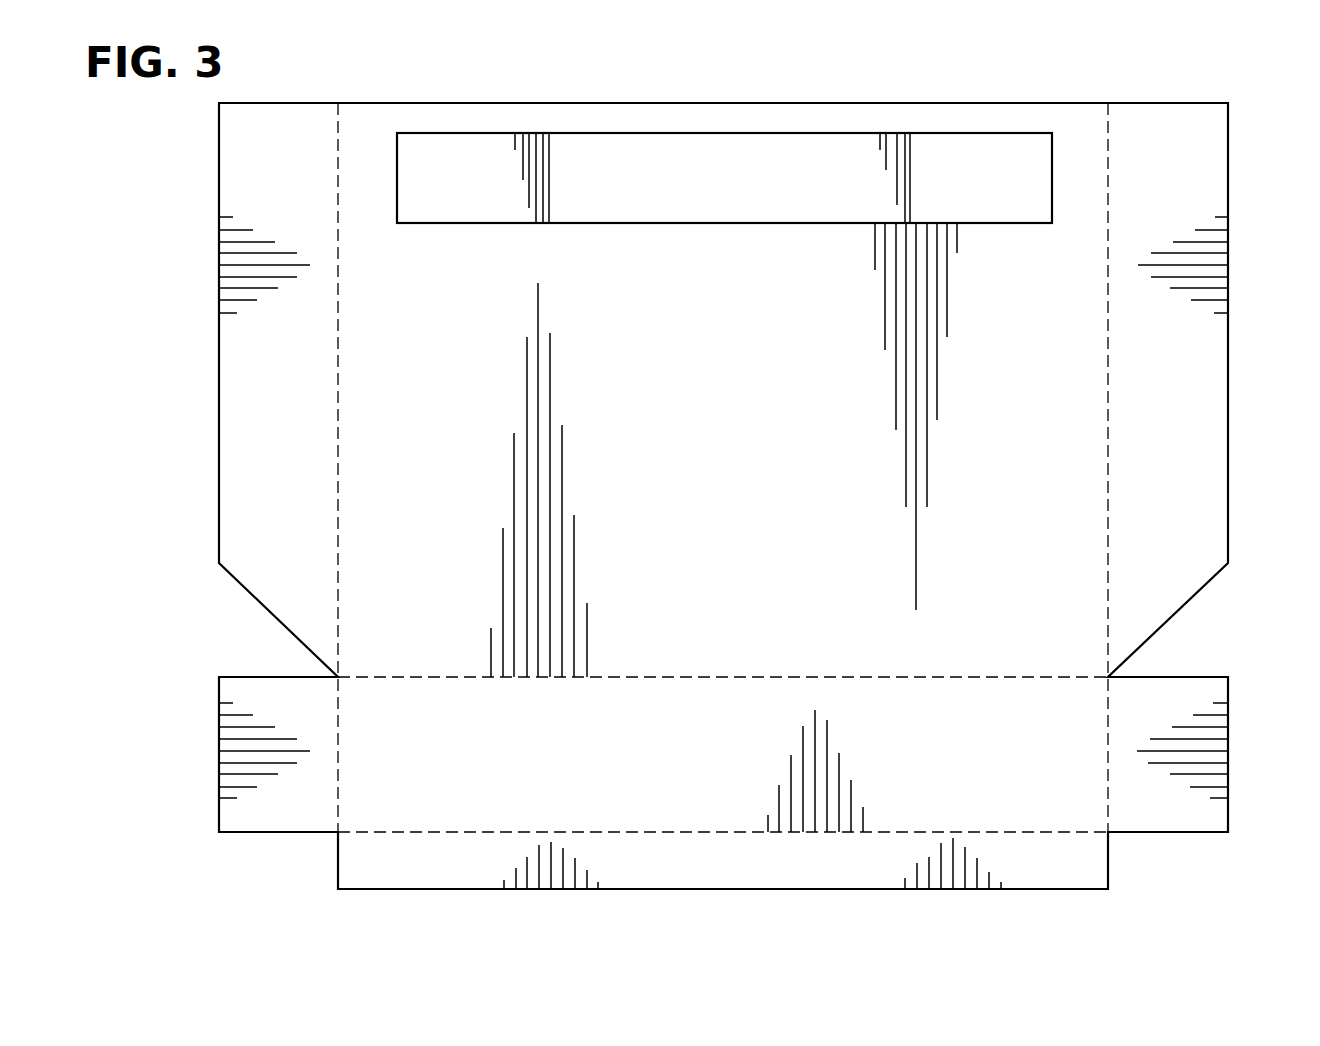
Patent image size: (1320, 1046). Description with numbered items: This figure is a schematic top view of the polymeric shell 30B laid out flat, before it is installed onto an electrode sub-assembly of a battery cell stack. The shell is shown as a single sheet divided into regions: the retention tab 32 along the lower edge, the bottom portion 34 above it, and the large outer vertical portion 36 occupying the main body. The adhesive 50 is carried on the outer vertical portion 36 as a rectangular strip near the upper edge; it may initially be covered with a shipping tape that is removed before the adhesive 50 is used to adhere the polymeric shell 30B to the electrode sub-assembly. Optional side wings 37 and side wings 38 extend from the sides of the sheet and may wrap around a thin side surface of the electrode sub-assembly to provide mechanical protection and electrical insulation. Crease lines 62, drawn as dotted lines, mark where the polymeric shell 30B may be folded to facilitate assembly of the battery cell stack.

The polymeric shell 30B is at (738, 632).
The retention tab 32 is at (676, 862).
The bottom portion 34 is at (493, 765).
The outer vertical portion 36 is at (1072, 410).
The side wings 37 is at (305, 803).
The side wings 38 is at (272, 489).
The adhesive 50 is at (707, 133).
The crease lines 62 is at (338, 200).